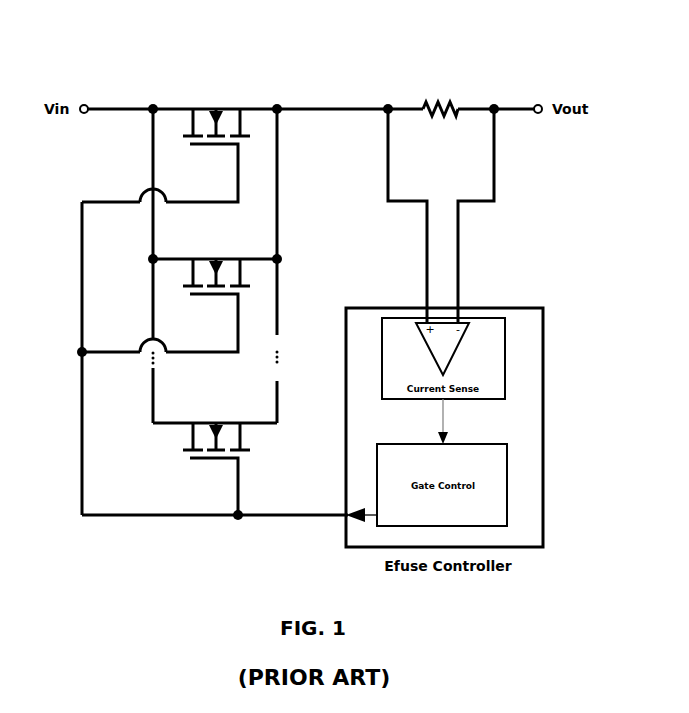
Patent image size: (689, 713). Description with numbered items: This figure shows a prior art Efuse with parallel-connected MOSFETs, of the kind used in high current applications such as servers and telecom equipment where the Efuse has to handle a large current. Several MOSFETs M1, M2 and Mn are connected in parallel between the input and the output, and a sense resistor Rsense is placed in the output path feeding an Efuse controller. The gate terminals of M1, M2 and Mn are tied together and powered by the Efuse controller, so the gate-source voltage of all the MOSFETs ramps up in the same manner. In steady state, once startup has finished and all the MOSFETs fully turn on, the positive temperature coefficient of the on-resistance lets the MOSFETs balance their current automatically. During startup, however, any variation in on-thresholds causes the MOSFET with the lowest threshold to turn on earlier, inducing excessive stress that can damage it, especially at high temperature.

The MOSFET M1 is at (166, 144).
The MOSFET M2 is at (179, 295).
The MOSFET Mn is at (215, 458).
The sense resistor Rsense is at (437, 95).